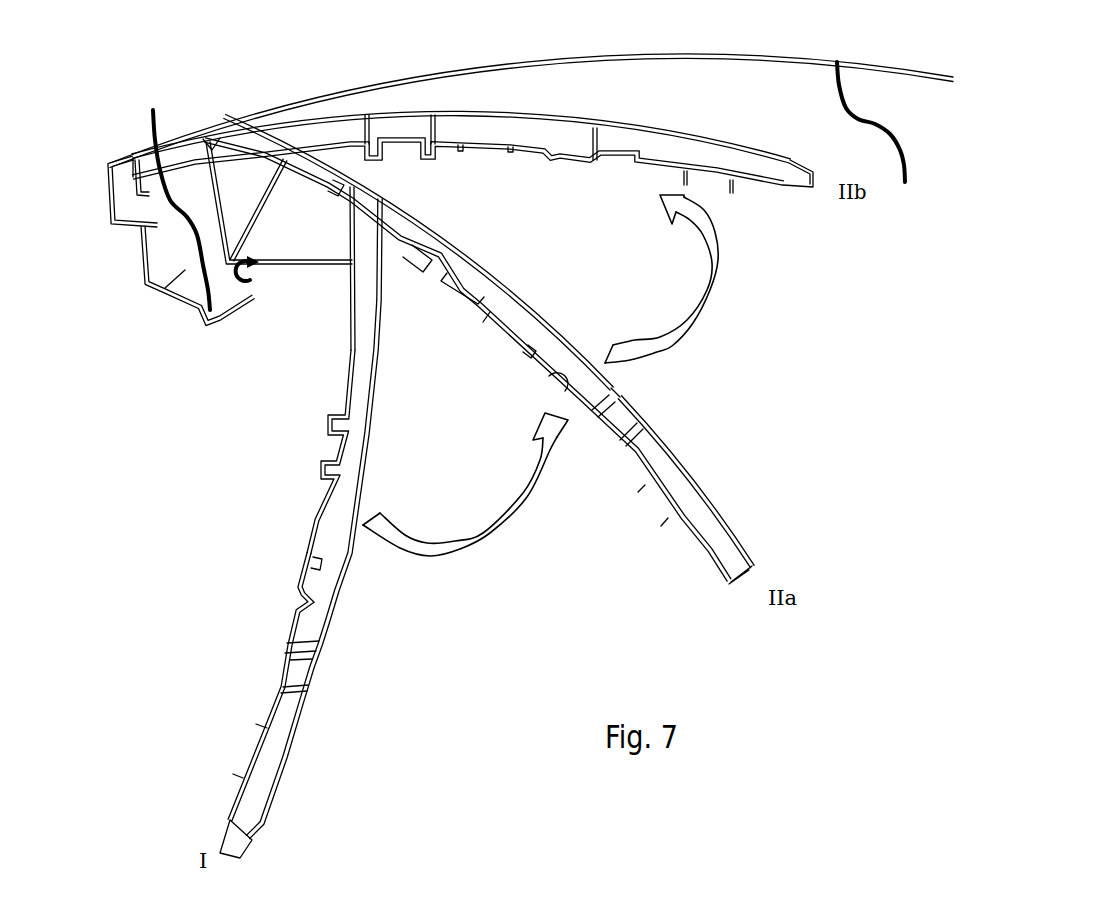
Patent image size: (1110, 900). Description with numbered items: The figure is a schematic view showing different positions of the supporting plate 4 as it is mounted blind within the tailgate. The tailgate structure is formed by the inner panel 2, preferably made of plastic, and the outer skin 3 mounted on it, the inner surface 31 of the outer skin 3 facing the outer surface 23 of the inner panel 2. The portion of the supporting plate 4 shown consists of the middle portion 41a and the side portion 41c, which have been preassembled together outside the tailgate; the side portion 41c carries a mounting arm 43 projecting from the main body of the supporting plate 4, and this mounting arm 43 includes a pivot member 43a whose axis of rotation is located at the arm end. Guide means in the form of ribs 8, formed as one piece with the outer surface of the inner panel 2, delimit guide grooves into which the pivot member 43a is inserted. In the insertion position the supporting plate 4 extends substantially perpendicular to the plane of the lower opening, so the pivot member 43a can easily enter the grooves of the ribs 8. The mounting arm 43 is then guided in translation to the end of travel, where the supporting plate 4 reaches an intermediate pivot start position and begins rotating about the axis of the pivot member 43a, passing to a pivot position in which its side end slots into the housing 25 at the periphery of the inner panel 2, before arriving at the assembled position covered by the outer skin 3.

The inner panel 2 is at (86, 231).
The outer skin 3 is at (390, 68).
The supporting plate 4 is at (411, 719).
The ribs 8 is at (212, 325).
The outer surface of the inner panel 23 is at (179, 189).
The housing 25 is at (118, 197).
The inner surface of the outer skin 31 is at (884, 147).
The middle portion 41a is at (272, 762).
The side portion 41c is at (332, 548).
The mounting arm 43 is at (298, 273).
The pivot member 43a is at (236, 282).